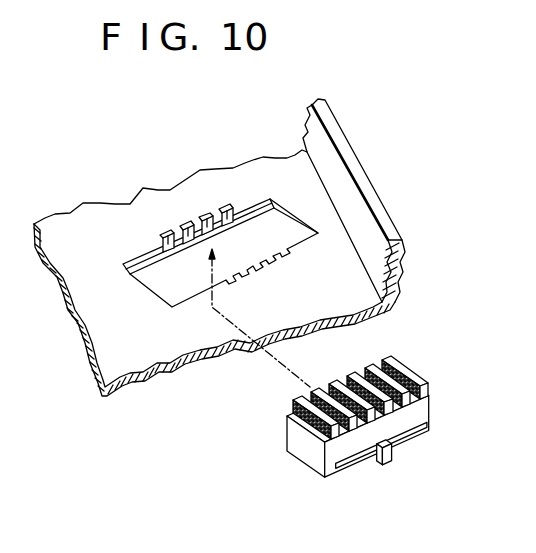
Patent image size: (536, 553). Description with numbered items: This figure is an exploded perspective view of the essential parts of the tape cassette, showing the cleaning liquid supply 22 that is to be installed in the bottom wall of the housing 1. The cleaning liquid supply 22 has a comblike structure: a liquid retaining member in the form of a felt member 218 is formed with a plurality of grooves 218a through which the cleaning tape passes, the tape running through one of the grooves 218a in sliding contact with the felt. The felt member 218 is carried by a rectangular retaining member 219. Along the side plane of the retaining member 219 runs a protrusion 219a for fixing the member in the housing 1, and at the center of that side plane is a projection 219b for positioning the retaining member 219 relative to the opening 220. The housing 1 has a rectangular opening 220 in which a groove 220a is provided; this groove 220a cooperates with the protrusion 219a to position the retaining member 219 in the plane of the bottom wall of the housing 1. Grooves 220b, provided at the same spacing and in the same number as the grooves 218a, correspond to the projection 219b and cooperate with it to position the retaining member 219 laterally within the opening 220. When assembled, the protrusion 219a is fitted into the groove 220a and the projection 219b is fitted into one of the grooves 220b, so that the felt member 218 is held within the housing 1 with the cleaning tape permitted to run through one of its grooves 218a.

The housing 1 is at (285, 170).
The cleaning liquid supply 22 is at (198, 390).
The felt member 218 is at (388, 397).
The grooves 218a is at (414, 405).
The retaining member 219 is at (353, 435).
The protrusion 219a is at (358, 467).
The projection 219b is at (388, 462).
The opening 220 is at (196, 267).
The groove 220a is at (150, 272).
The grooves 220b is at (172, 238).